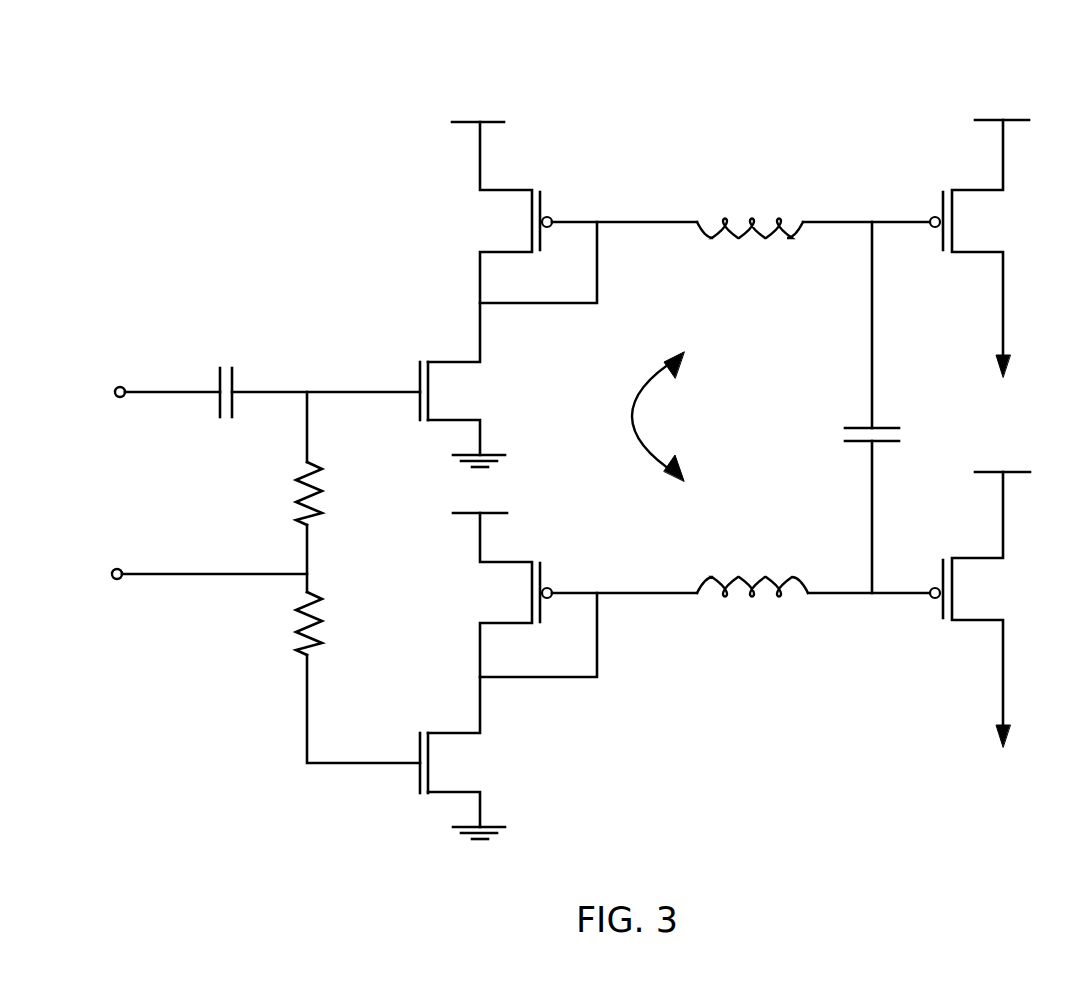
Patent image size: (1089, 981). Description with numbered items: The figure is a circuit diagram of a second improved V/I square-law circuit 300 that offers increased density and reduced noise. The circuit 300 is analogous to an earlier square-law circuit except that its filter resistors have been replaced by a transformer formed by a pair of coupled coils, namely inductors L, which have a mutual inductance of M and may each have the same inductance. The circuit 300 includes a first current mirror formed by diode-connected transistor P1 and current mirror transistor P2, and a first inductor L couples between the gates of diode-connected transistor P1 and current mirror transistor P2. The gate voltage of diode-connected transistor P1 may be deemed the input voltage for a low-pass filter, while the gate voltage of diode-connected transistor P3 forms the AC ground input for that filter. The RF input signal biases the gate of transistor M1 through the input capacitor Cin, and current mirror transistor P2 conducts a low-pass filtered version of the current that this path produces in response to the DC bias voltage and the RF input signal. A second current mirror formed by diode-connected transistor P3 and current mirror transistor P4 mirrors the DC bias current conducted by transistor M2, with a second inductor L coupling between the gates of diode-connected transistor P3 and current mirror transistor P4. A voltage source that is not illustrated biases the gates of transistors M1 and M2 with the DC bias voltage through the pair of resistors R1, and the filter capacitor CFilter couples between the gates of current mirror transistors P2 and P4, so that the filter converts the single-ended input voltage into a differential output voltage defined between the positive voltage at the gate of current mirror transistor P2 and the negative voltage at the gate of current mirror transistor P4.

The V/I square-law circuit 300 is at (631, 42).
The diode-connected transistor P1 is at (574, 198).
The current mirror transistor P2 is at (988, 249).
The diode-connected transistor P3 is at (575, 580).
The current mirror transistor P4 is at (987, 610).
The transistor M1 is at (467, 385).
The transistor M2 is at (467, 758).
The resistor R1 is at (290, 492).
The inductor L is at (813, 208).
The input capacitor Cin is at (312, 374).
The filter capacitor CFilter is at (837, 407).
The mutual inductance M is at (644, 416).